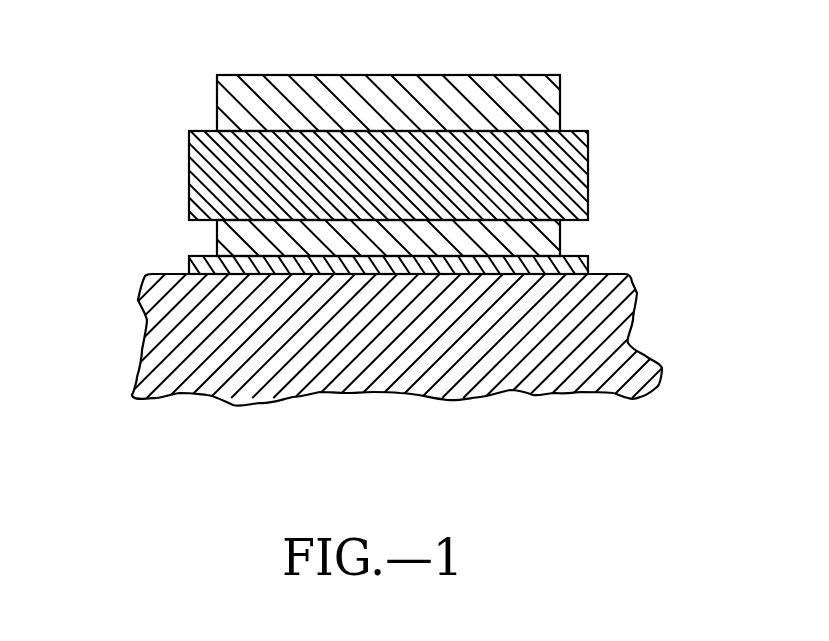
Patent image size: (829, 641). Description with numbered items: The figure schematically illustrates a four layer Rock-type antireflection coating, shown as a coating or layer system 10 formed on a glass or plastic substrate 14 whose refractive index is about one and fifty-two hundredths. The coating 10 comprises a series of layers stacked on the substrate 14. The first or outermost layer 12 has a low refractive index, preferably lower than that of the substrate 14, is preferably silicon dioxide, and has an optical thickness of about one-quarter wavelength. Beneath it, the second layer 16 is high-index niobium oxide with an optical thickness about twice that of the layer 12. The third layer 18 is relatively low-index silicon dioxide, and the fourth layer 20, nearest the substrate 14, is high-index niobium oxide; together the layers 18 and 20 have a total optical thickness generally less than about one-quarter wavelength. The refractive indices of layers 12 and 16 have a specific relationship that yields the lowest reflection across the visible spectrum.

The coating or layer system 10 is at (277, 63).
The first or outermost layer 12 is at (540, 97).
The substrate 14 is at (526, 358).
The second layer 16 is at (567, 168).
The third layer 18 is at (562, 240).
The fourth layer 20 is at (187, 263).